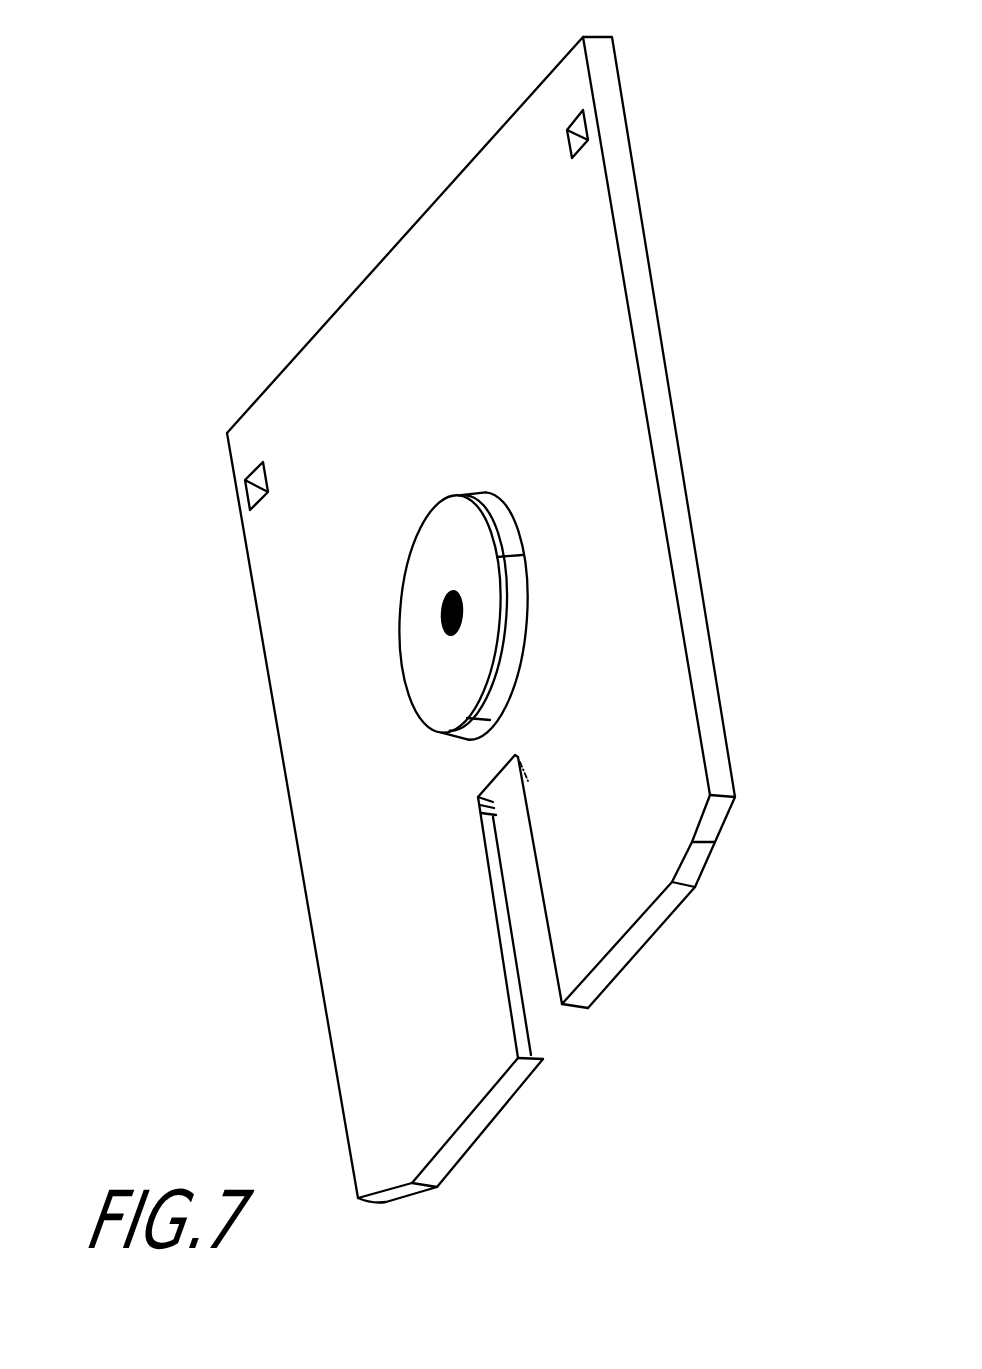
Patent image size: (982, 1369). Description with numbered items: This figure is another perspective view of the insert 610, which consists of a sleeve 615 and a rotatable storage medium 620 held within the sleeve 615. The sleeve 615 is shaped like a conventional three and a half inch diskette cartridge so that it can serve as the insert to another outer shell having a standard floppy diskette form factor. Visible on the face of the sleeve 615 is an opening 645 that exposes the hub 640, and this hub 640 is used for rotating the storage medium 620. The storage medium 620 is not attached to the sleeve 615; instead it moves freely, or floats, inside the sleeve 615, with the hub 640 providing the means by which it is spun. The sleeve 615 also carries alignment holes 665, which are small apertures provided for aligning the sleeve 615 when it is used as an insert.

The insert 610 is at (98, 163).
The sleeve 615 is at (853, 358).
The rotatable storage medium 620 is at (543, 1013).
The hub 640 is at (527, 590).
The opening 645 is at (410, 700).
The alignment holes 665 is at (763, 15).